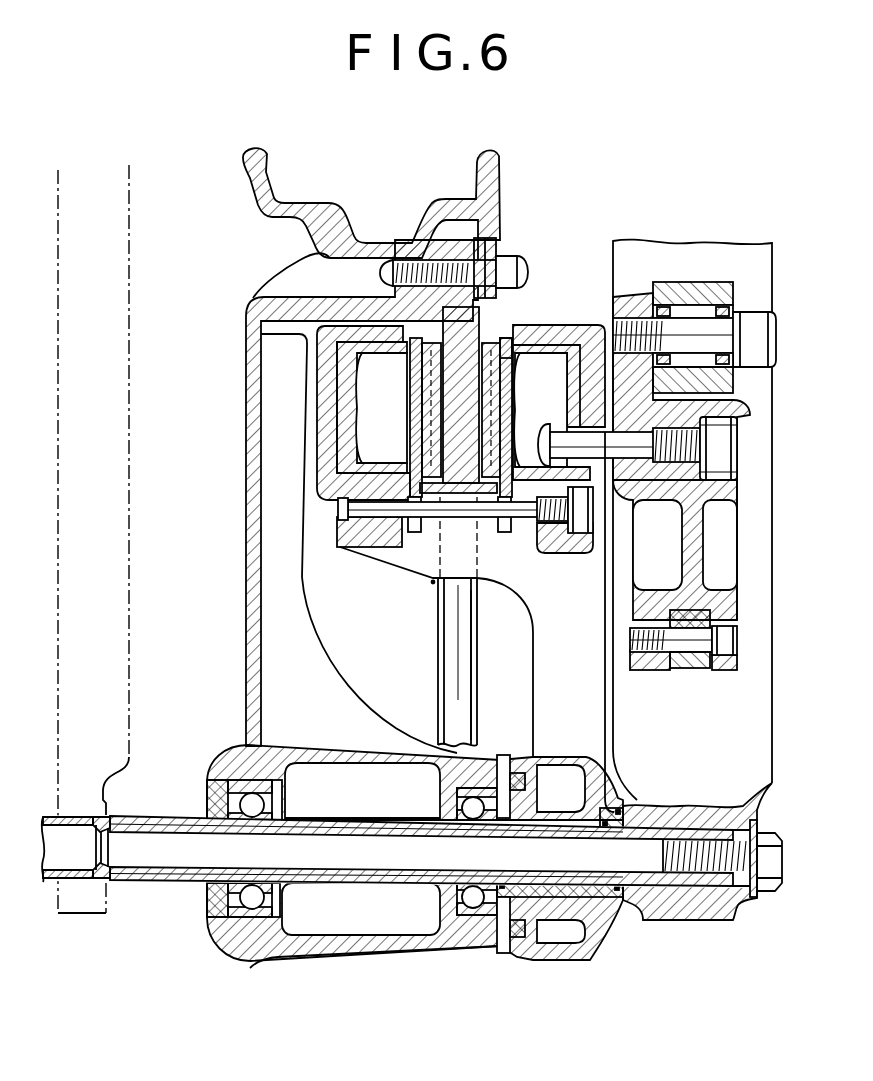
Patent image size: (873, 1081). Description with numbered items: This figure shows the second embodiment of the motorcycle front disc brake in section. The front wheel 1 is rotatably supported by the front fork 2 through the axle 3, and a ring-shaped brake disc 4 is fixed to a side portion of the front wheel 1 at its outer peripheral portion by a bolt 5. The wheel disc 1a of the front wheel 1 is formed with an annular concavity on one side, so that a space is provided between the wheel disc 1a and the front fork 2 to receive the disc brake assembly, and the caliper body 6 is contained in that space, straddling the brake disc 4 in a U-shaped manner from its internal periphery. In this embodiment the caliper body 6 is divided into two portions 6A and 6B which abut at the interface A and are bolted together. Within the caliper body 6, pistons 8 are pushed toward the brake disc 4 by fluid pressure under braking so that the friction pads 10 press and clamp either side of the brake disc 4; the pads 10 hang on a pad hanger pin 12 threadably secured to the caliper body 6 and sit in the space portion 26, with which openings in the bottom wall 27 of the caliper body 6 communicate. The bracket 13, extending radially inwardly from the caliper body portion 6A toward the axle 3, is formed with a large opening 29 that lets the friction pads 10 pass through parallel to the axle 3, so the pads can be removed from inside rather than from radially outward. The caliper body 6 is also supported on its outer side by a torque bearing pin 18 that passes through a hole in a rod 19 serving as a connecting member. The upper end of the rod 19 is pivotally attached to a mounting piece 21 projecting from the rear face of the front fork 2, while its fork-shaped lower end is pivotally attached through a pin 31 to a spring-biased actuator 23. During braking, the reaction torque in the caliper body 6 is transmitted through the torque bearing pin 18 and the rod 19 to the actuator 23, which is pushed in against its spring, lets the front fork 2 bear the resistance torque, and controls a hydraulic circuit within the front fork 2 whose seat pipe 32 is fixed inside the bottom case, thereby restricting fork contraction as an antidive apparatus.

The front wheel 1 is at (249, 297).
The wheel disc 1a is at (246, 430).
The front fork 2 is at (134, 668).
The axle 3 is at (660, 878).
The brake disc 4 is at (476, 306).
The bolt 5 is at (499, 253).
The caliper body 6 is at (313, 347).
The caliper body portion 6A is at (507, 583).
The caliper body portion 6B is at (384, 563).
The piston 8 is at (347, 443).
The friction pads 10 is at (428, 337).
The pad hanger pin 12 is at (562, 548).
The bracket 13 is at (606, 712).
The torque bearing pin 18 is at (725, 447).
The rod 19 is at (642, 570).
The mounting piece 21 is at (685, 290).
The actuator 23 is at (688, 670).
The space portion 26 is at (513, 313).
The bottom wall 27 is at (478, 612).
The opening 29 is at (606, 727).
The pin 31 is at (726, 670).
The seat pipe 32 is at (538, 353).
The interface A is at (432, 586).